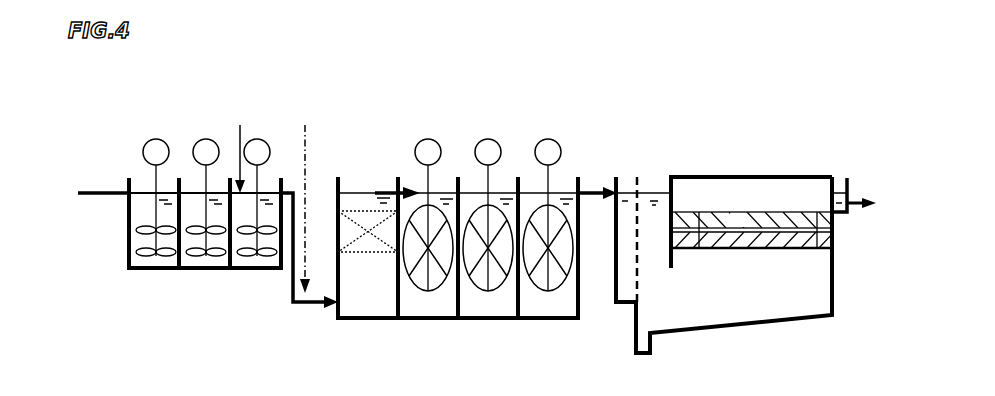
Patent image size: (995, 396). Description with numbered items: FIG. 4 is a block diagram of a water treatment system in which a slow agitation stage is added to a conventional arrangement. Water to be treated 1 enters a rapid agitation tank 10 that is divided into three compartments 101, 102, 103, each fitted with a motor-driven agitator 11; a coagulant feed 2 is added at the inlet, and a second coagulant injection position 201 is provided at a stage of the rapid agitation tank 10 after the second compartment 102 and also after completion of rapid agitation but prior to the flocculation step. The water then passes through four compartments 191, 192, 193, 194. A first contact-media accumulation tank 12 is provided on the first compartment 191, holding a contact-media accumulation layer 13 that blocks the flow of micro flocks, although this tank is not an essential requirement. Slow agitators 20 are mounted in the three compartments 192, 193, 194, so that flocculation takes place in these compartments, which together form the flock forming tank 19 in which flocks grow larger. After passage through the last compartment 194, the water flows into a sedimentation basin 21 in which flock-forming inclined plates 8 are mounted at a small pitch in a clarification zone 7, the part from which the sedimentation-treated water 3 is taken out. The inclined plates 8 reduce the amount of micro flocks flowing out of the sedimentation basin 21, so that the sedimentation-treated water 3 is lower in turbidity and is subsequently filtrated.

The water to be treated 1 is at (104, 185).
The chemical feed 2 is at (116, 182).
The sedimentation-treated water 3 is at (854, 195).
The clarification zone 7 is at (752, 249).
The flock-forming inclined plates 8 is at (752, 230).
The rapid agitation tank 10 is at (233, 257).
The agitator motor 11 is at (206, 146).
The first contact-media accumulation tank 12 is at (368, 275).
The contact-media accumulation layer 13 is at (368, 231).
The flock forming tank 19 is at (507, 275).
The slow agitator 20 is at (481, 146).
The sedimentation basin 21 is at (731, 275).
The first compartment 101 is at (156, 224).
The second compartment 102 is at (206, 224).
The third compartment 103 is at (257, 224).
The first compartment 191 is at (397, 262).
The second compartment 192 is at (429, 251).
The third compartment 193 is at (489, 251).
The last compartment 194 is at (549, 251).
The second coagulant injection position 201 is at (276, 201).